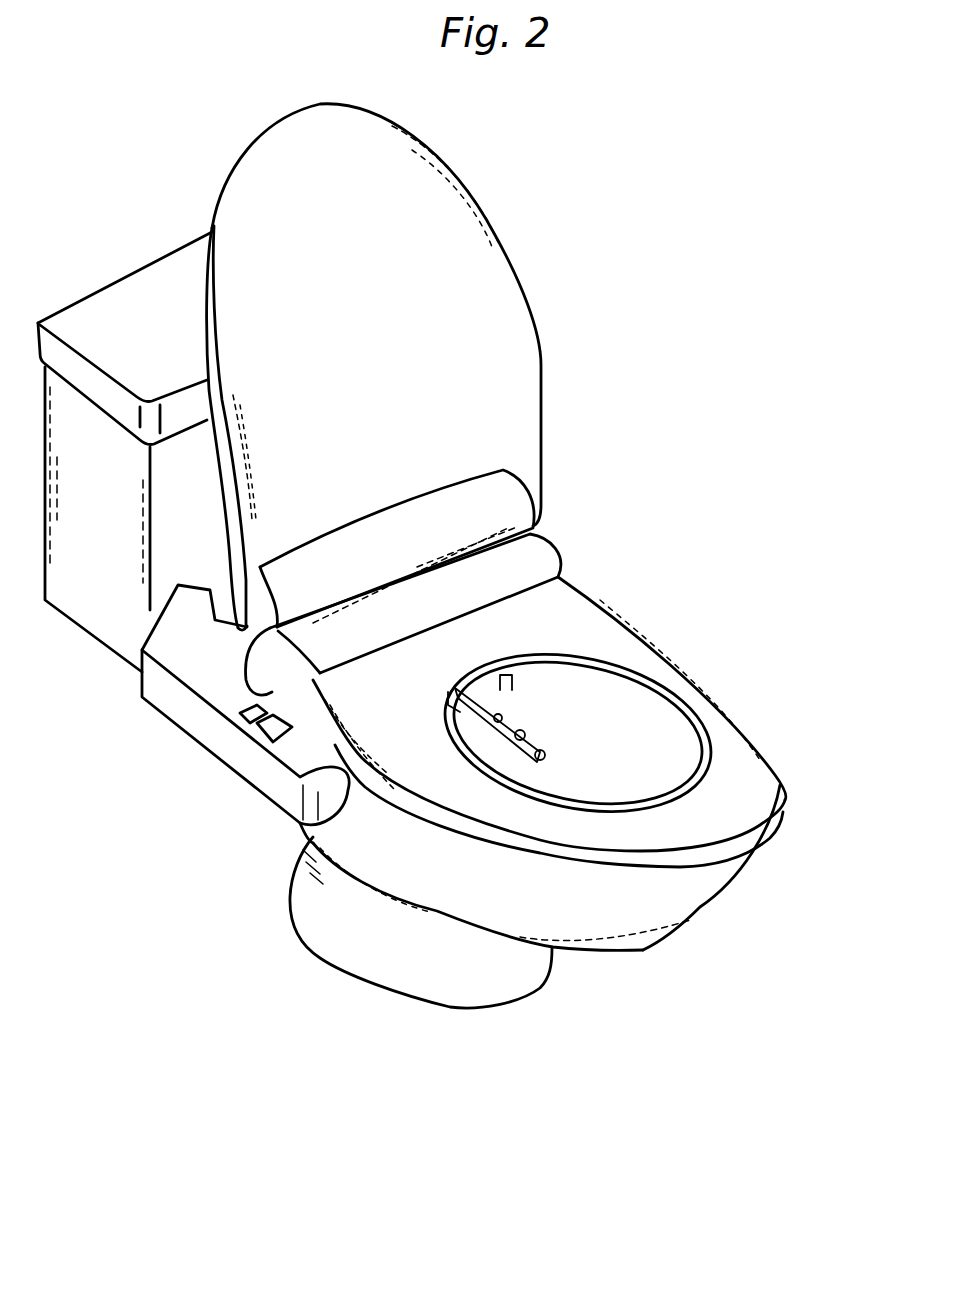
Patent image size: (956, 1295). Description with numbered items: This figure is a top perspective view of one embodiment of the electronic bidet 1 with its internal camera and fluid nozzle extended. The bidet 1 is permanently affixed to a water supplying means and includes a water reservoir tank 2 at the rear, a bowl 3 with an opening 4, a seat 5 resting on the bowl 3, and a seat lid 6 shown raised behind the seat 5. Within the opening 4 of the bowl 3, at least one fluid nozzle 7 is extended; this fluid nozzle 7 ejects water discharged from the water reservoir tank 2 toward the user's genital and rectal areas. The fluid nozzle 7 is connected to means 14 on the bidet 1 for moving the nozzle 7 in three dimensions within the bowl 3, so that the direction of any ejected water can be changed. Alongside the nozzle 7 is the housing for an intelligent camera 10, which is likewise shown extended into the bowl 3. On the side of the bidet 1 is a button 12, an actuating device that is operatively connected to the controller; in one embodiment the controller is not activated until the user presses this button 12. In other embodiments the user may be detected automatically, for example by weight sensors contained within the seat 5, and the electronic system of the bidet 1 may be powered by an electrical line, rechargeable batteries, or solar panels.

The bidet 1 is at (468, 1037).
The water reservoir tank 2 is at (160, 292).
The bowl 3 is at (643, 917).
The opening 4 is at (520, 777).
The seat 5 is at (757, 790).
The seat lid 6 is at (262, 168).
The fluid nozzle 7 is at (547, 752).
The intelligent camera 10 is at (523, 728).
The button 12 is at (257, 705).
The means for moving the nozzle 14 is at (483, 700).